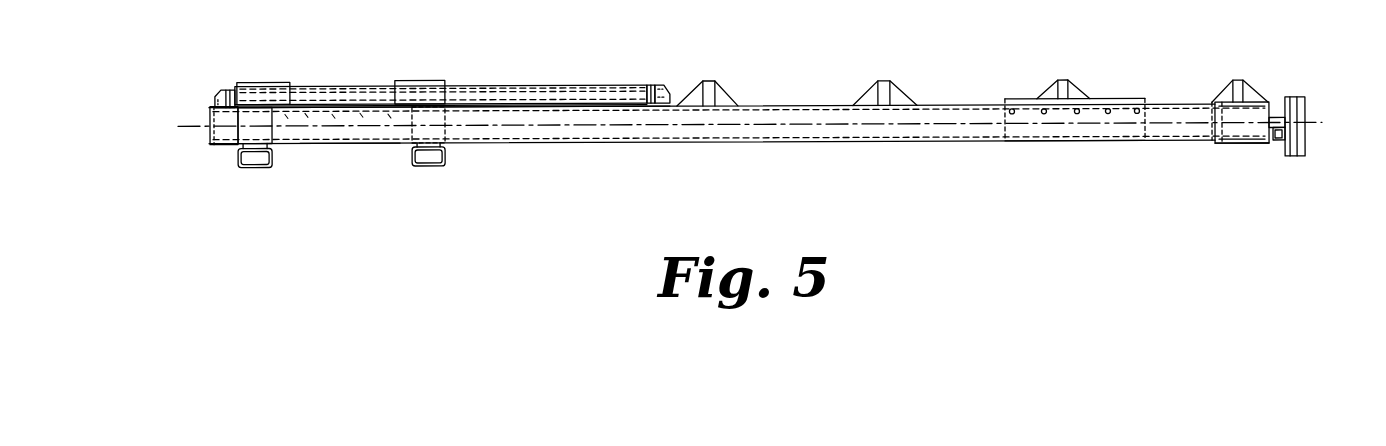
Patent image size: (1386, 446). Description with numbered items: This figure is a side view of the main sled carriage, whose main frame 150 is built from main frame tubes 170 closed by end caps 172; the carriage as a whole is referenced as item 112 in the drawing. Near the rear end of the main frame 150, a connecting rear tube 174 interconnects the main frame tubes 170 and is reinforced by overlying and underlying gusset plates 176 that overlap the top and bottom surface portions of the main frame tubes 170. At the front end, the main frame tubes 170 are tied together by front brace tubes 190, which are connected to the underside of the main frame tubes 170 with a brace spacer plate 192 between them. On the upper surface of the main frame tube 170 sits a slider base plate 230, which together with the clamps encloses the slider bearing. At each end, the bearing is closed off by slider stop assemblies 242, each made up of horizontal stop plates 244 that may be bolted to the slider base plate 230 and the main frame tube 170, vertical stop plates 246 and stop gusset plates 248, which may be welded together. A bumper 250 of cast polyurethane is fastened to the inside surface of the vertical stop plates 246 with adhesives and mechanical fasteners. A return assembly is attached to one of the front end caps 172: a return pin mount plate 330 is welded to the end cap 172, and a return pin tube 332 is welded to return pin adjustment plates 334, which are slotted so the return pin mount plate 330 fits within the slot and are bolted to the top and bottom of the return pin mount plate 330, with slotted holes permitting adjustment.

The support assembly 112 is at (860, 146).
The main frame 150 is at (847, 141).
The main frame tube 170 is at (818, 112).
The end cap 172 is at (211, 134).
The connecting rear tube 174 is at (1213, 125).
The gusset plate 176 is at (1253, 95).
The front brace tube 190 is at (247, 167).
The brace spacer plate 192 is at (272, 148).
The slider base plate 230 is at (211, 106).
The slider stop assembly 242 is at (207, 73).
The horizontal stop plate 244 is at (665, 107).
The vertical stop plate 246 is at (226, 87).
The stop gusset plate 248 is at (669, 100).
The bumper 250 is at (232, 92).
The return pin mount plate 330 is at (1273, 148).
The return pin tube 332 is at (1307, 100).
The return pin adjustment plate 334 is at (1278, 144).